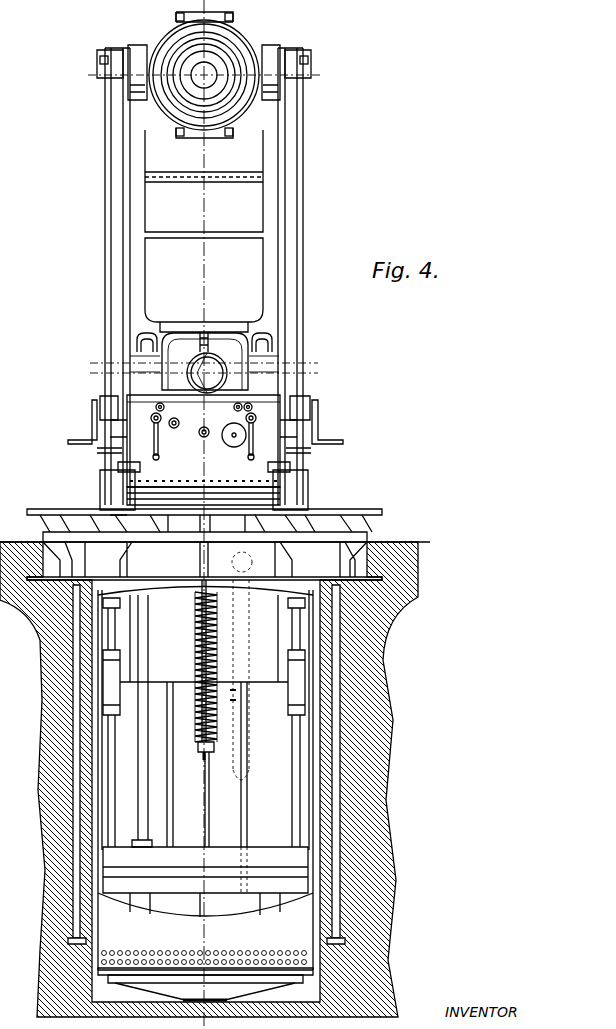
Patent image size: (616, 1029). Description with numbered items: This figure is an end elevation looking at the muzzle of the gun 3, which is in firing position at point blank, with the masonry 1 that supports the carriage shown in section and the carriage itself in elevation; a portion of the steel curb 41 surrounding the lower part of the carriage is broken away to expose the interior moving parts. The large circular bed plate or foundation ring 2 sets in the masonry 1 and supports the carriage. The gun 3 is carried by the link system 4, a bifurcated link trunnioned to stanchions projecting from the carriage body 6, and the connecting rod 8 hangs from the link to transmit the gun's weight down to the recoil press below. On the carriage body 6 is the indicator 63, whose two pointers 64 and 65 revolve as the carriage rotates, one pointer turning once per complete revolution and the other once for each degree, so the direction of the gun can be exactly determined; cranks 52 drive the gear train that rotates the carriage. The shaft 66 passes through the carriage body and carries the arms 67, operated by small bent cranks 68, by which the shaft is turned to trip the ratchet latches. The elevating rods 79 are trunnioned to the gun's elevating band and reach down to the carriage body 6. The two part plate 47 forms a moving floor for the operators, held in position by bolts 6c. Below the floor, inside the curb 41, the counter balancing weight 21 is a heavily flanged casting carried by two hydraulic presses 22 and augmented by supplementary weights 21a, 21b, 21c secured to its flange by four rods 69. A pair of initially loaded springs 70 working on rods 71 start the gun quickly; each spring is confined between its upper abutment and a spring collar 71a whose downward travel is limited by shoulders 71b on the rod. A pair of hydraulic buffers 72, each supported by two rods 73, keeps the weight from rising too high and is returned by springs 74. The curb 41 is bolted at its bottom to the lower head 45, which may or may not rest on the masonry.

The masonry 1 is at (27, 540).
The bed plate or foundation ring 2 is at (204, 561).
The gun 3 is at (217, 95).
The link system 4 is at (204, 231).
The carriage body 6 is at (203, 441).
The bolts 6c is at (215, 484).
The connecting rod 8 is at (201, 334).
The counter balancing weight 21 is at (205, 870).
The supplementary weight 21a is at (171, 872).
The supplementary weight 21b is at (265, 886).
The supplementary weight 21c is at (218, 893).
The hydraulic presses 22 is at (149, 782).
The steel curb 41 is at (205, 949).
The lower head 45 is at (270, 990).
The two part plate 47 is at (370, 508).
The cranks 52 is at (158, 456).
The indicator 63 is at (190, 385).
The pointer 64 is at (213, 368).
The pointer 65 is at (200, 360).
The shaft 66 is at (290, 473).
The arms 67 is at (304, 445).
The bent cranks 68 is at (312, 430).
The rods 69 is at (249, 822).
The initially loaded springs 70 is at (198, 745).
The rods 71 is at (209, 802).
The spring collar 71a is at (221, 745).
The shoulders 71b is at (231, 670).
The hydraulic buffers 72 is at (307, 662).
The rods 73 is at (302, 783).
The springs 74 is at (117, 625).
The elevating rods 79 is at (105, 238).